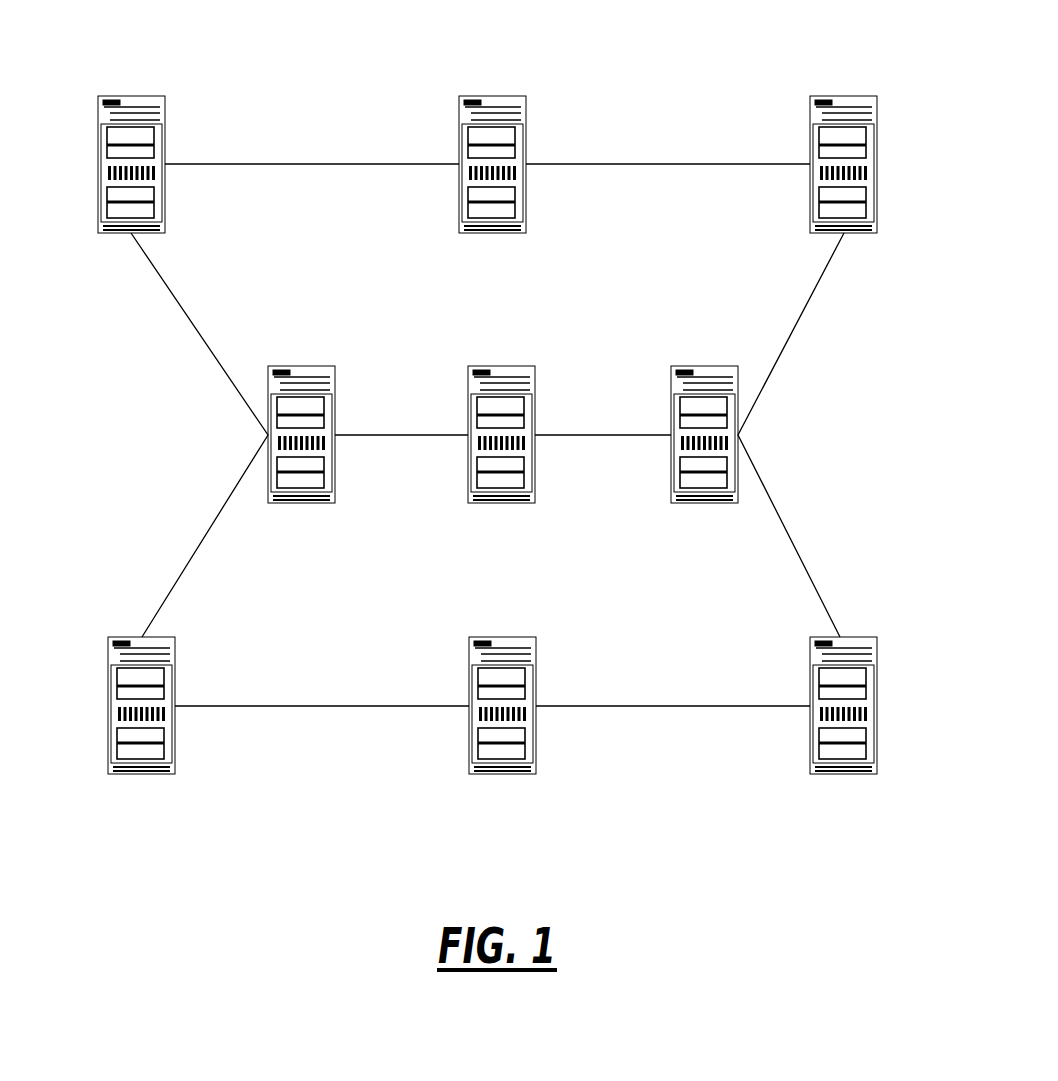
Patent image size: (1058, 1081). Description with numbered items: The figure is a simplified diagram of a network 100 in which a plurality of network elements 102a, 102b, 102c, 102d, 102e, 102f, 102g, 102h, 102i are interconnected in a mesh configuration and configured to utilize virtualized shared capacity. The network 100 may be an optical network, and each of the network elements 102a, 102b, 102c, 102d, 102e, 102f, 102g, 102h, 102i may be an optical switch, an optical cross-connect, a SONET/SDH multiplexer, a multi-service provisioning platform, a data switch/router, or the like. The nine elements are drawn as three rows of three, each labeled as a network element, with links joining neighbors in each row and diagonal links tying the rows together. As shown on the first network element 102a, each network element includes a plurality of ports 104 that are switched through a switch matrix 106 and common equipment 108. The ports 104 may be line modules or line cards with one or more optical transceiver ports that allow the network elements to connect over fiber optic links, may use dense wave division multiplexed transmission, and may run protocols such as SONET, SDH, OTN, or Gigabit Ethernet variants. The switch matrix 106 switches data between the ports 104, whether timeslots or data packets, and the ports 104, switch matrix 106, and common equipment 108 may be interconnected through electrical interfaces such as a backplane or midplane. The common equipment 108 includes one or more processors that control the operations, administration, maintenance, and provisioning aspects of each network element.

The network 100 is at (692, 57).
The network element 102a is at (146, 142).
The network element 102b is at (497, 95).
The network element 102c is at (845, 95).
The network element 102d is at (305, 365).
The network element 102e is at (505, 365).
The network element 102f is at (708, 500).
The network element 102g is at (147, 772).
The network element 102h is at (517, 772).
The network element 102i is at (848, 772).
The ports 104 is at (155, 140).
The switch matrix 106 is at (113, 177).
The common equipment 108 is at (147, 112).